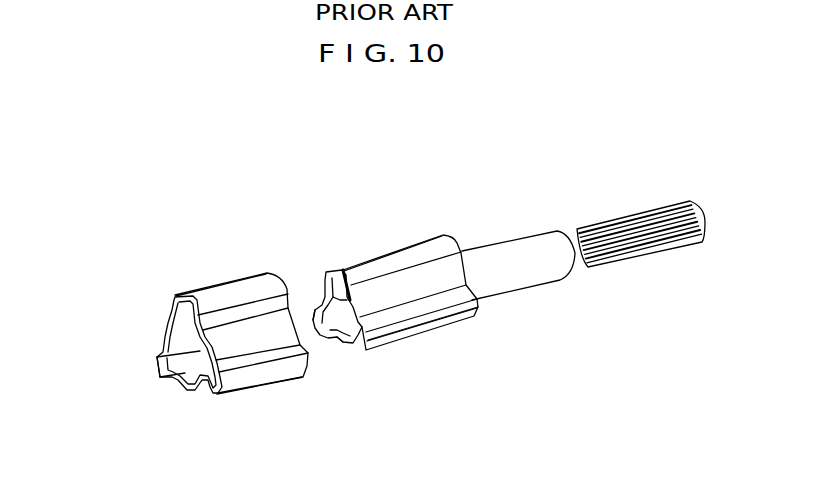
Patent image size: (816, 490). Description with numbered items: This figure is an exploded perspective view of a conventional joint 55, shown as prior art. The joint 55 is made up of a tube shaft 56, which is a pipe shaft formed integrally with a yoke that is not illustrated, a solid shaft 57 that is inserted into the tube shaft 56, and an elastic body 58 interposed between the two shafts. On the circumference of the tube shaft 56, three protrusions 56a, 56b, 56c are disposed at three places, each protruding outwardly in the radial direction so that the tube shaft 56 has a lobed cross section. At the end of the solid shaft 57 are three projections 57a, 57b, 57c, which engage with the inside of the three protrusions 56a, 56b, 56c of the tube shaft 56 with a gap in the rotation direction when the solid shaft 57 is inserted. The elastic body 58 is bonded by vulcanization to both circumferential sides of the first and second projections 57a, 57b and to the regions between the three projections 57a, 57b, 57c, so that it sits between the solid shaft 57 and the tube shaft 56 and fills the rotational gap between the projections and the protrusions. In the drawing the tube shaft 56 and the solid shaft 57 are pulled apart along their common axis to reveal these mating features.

The joint 55 is at (273, 178).
The tube shaft 56 is at (148, 330).
The protrusion 56a is at (157, 367).
The protrusion 56b is at (221, 283).
The protrusion 56c is at (242, 387).
The solid shaft 57 is at (512, 252).
The first projection 57a is at (320, 338).
The second projection 57b is at (402, 252).
The projection 57c is at (402, 333).
The elastic body 58 is at (313, 290).